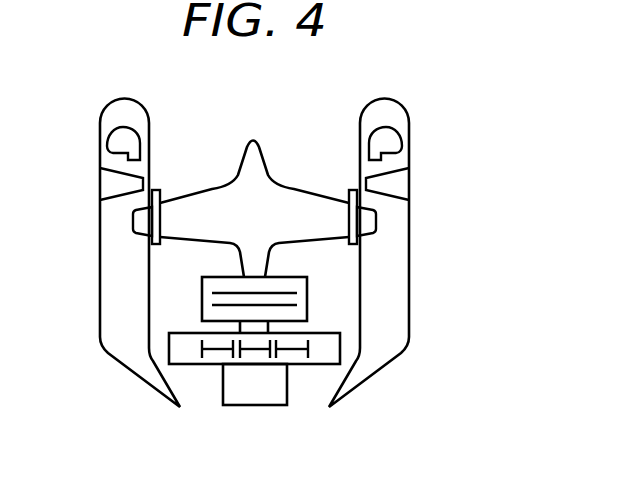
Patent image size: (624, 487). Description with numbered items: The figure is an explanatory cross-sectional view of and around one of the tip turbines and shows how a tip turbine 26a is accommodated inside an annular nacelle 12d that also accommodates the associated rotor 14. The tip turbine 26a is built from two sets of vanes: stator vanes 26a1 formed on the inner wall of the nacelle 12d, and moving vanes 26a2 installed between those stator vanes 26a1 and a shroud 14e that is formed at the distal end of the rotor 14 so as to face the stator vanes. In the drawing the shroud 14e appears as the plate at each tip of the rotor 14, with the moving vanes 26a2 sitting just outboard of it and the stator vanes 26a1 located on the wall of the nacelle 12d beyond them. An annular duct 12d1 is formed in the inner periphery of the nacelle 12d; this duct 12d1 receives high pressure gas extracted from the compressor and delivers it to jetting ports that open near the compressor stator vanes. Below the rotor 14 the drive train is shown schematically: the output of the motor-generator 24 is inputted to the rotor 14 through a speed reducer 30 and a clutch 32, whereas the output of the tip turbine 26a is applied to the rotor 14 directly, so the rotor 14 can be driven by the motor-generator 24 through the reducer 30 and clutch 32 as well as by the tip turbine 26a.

The annular nacelle 12d is at (407, 112).
The annular duct 12d1 is at (120, 133).
The rotor 14 is at (313, 212).
The shroud 14e is at (156, 192).
The motor-generator 24 is at (262, 405).
The tip turbine 26a is at (134, 221).
The stator vanes 26a1 is at (390, 185).
The moving vanes 26a2 is at (370, 223).
The speed reducer 30 is at (298, 365).
The clutch 32 is at (308, 298).